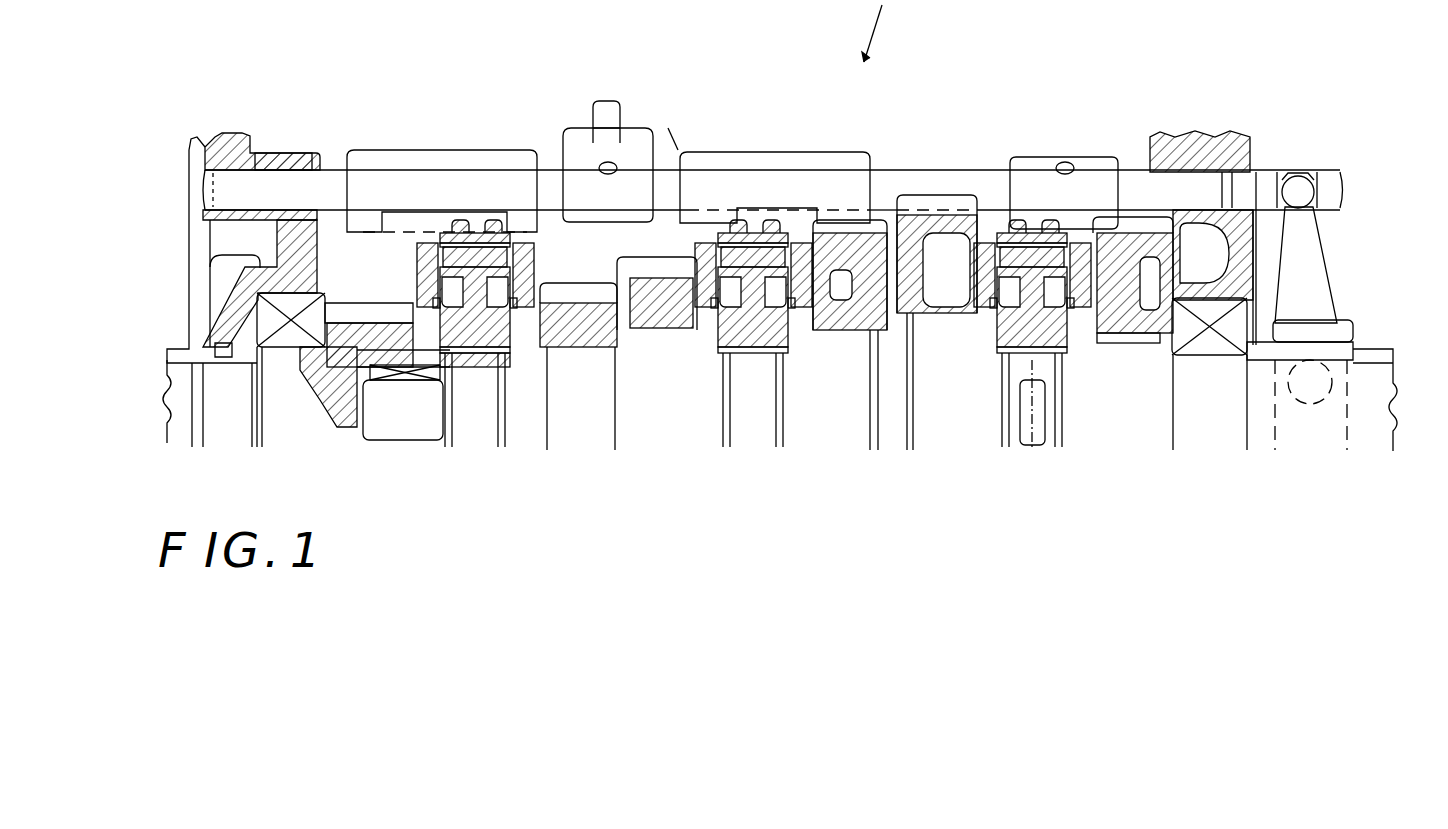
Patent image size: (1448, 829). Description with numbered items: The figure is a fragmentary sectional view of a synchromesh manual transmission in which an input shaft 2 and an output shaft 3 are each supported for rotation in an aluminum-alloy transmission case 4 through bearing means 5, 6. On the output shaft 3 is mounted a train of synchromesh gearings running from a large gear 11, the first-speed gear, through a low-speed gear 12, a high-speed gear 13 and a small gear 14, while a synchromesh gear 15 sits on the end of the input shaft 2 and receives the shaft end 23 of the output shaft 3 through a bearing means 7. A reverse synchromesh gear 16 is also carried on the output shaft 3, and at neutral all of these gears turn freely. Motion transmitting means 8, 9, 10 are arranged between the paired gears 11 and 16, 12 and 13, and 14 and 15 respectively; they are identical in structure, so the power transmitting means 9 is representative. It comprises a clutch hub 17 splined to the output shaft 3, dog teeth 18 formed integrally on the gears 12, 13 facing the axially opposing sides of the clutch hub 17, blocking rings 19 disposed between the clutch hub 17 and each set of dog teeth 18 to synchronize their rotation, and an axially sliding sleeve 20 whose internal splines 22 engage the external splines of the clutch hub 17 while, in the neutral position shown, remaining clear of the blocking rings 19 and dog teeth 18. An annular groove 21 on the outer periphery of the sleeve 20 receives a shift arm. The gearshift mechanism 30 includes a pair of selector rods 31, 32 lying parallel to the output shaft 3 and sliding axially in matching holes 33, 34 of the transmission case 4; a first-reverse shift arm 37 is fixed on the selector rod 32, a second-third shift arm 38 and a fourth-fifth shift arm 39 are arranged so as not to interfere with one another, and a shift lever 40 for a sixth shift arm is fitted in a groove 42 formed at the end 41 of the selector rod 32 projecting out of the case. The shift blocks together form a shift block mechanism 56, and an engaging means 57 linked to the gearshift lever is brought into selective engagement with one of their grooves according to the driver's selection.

The input shaft 2 is at (166, 420).
The output shaft 3 is at (1396, 420).
The transmission case 4 is at (229, 128).
The bearing means 5 is at (290, 340).
The bearing means 6 is at (1210, 360).
The bearing means 7 is at (425, 370).
The motion transmitting means 8 is at (1042, 455).
The power transmitting means 9 is at (755, 370).
The motion transmitting means 10 is at (482, 385).
The large gear 11 is at (950, 215).
The low-speed gear 12 is at (862, 240).
The high-speed gear 13 is at (655, 285).
The small gear 14 is at (570, 325).
The synchromesh gear 15 is at (352, 327).
The reverse synchromesh gear 16 is at (1135, 240).
The clutch hub 17 is at (462, 370).
The dog teeth 18 is at (425, 300).
The blocking ring 19 is at (442, 305).
The sleeve 20 is at (496, 228).
The annular groove 21 is at (480, 232).
The internal splines 22 is at (448, 227).
The shaft end 23 is at (427, 428).
The gearshift mechanism 30 is at (670, 125).
The selector rod 31 is at (905, 190).
The selector rod 32 is at (1262, 190).
The matching hole 33 is at (1245, 175).
The matching hole 34 is at (232, 150).
The 1st-reverse shift arm 37 is at (1113, 160).
The 2nd-3rd shift arm 38 is at (823, 150).
The 4th-5th shift arm 39 is at (455, 150).
The shift lever 40 is at (1312, 272).
The end of selector rod 41 is at (1325, 180).
The groove 42 is at (1300, 174).
The shift block mechanism 56 is at (582, 118).
The engaging means 57 is at (615, 126).